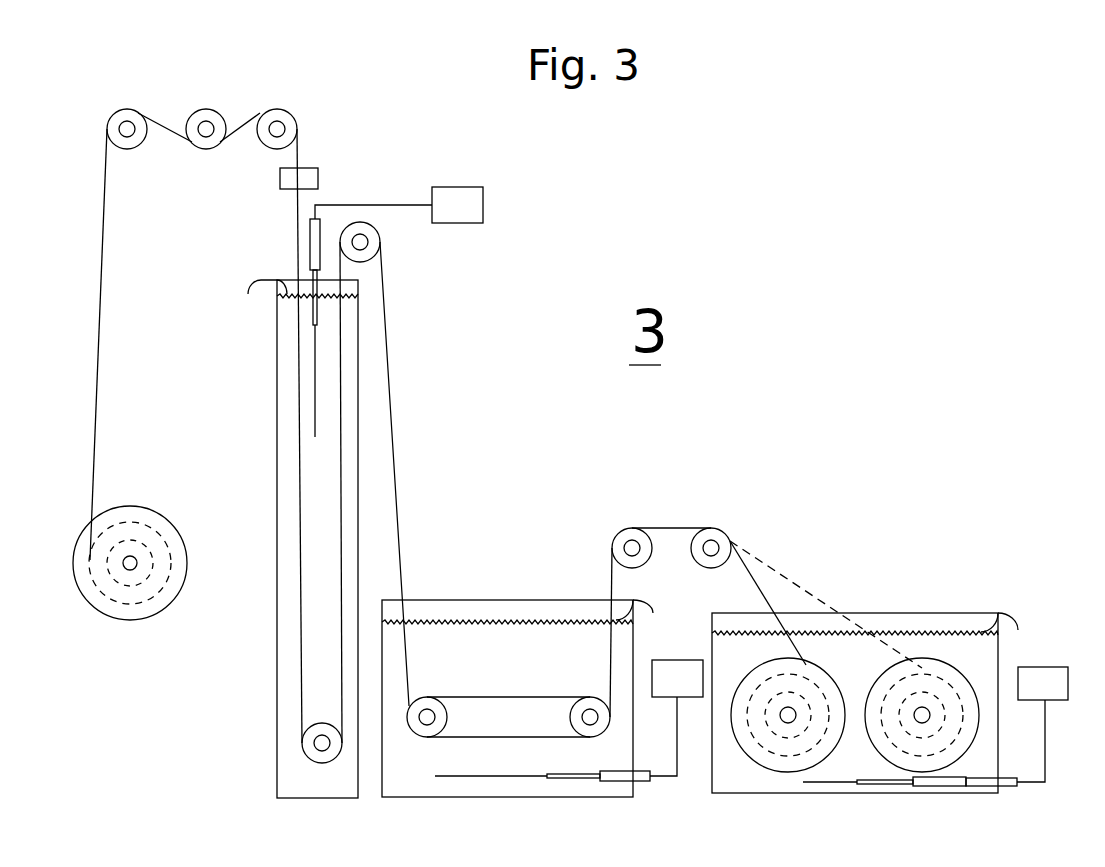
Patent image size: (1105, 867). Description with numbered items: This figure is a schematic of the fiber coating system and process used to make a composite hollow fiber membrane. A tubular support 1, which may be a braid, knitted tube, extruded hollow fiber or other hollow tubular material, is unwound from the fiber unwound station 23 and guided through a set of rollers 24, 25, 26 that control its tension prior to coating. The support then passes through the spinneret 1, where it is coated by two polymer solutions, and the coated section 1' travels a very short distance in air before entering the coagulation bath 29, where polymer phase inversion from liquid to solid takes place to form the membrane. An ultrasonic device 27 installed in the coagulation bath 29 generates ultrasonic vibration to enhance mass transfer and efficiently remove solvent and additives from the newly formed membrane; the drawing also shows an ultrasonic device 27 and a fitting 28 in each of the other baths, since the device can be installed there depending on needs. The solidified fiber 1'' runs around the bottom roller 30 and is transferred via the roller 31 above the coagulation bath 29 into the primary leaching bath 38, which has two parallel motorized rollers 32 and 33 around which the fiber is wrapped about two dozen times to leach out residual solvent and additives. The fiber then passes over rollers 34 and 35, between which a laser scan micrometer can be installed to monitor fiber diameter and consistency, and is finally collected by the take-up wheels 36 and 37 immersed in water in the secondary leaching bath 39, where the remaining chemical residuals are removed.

The tubular support 1 is at (506, 428).
The fiber section with sensor probe 1' is at (378, 256).
The fiber section in bath 1'' is at (320, 554).
The fiber unwound station 23 is at (130, 586).
The roller 24 is at (127, 114).
The roller 25 is at (206, 148).
The roller 26 is at (277, 114).
The ultrasonic device 27 is at (687, 555).
The overflow / inlet pipe 28 is at (632, 466).
The coagulation bath 29 is at (292, 539).
The motorized roller 30 is at (322, 758).
The roller 31 is at (382, 242).
The motorized roller 32 is at (498, 702).
The motorized roller 33 is at (590, 702).
The roller 34 is at (631, 530).
The roller 35 is at (711, 528).
The fiber take-up wheel 36 is at (788, 715).
The fiber take-up wheel 37 is at (922, 715).
The primary leaching bath 38 is at (507, 699).
The secondary leaching bath 39 is at (855, 703).